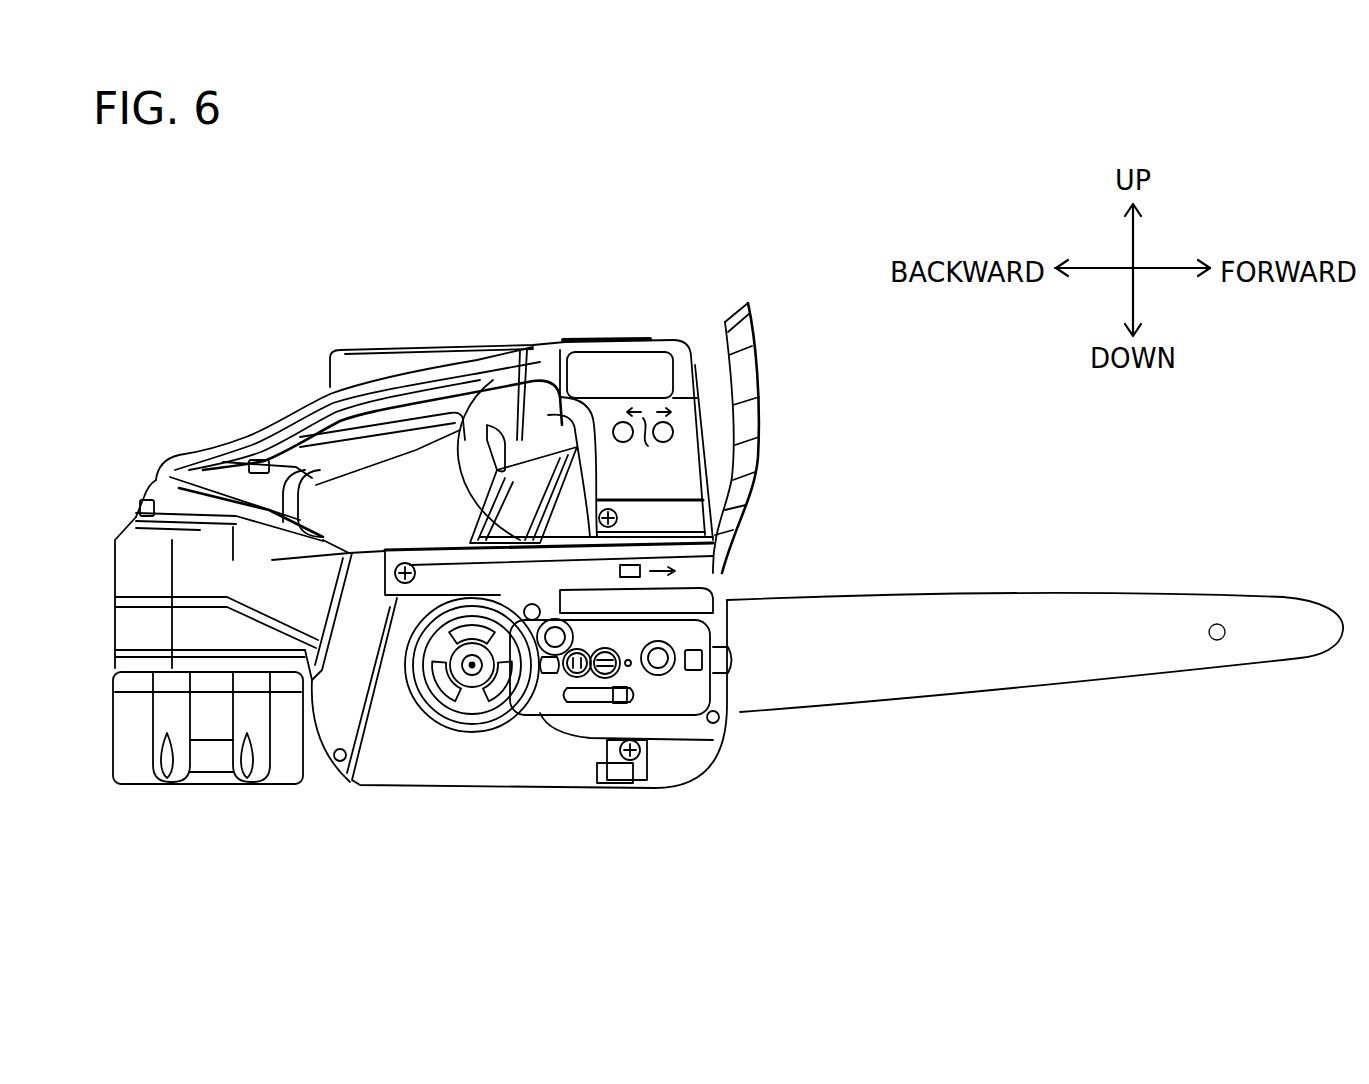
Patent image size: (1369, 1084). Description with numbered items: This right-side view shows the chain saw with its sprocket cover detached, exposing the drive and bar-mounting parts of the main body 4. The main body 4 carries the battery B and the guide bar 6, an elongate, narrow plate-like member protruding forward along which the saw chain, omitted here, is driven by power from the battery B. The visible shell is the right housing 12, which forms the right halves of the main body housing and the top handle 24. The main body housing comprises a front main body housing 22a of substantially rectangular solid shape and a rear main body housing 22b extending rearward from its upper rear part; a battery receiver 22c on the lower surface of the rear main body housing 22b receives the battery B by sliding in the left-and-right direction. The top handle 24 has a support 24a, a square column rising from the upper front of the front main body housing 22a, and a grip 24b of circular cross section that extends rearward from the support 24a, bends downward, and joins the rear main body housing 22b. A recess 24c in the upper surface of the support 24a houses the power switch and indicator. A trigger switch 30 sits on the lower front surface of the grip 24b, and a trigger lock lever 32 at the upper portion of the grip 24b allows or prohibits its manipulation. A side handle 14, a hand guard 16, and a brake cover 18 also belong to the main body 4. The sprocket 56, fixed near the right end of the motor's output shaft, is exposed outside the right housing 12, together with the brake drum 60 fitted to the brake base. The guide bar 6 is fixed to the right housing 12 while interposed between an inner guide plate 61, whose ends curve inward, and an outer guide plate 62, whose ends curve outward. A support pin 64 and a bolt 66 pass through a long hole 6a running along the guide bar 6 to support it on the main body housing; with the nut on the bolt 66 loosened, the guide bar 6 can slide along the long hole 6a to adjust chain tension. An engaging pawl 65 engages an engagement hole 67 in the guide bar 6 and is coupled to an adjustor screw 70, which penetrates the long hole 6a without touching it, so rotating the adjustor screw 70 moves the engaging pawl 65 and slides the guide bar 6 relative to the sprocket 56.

The main body 4 is at (828, 240).
The guide bar 6 is at (1058, 612).
The long hole 6a is at (722, 665).
The right housing 12 is at (140, 560).
The side handle 14 is at (500, 530).
The hand guard 16 is at (750, 357).
The brake cover 18 is at (677, 520).
The front main body housing 22a is at (483, 773).
The rear main body housing 22b is at (122, 578).
The battery receiver 22c is at (197, 673).
The top handle 24 is at (357, 393).
The support 24a is at (670, 473).
The grip 24b is at (330, 397).
The recess 24c is at (636, 335).
The trigger switch 30 is at (517, 440).
The trigger lock lever 32 is at (387, 360).
The sprocket 56 is at (467, 690).
The brake drum 60 is at (423, 683).
The inner guide plate 61 is at (687, 583).
The outer guide plate 62 is at (572, 730).
The support pin 64 is at (555, 648).
The engaging pawl 65 is at (620, 700).
The bolt 66 is at (660, 677).
The engagement hole 67 is at (630, 758).
The adjustor screw 70 is at (585, 675).
The battery B is at (135, 750).